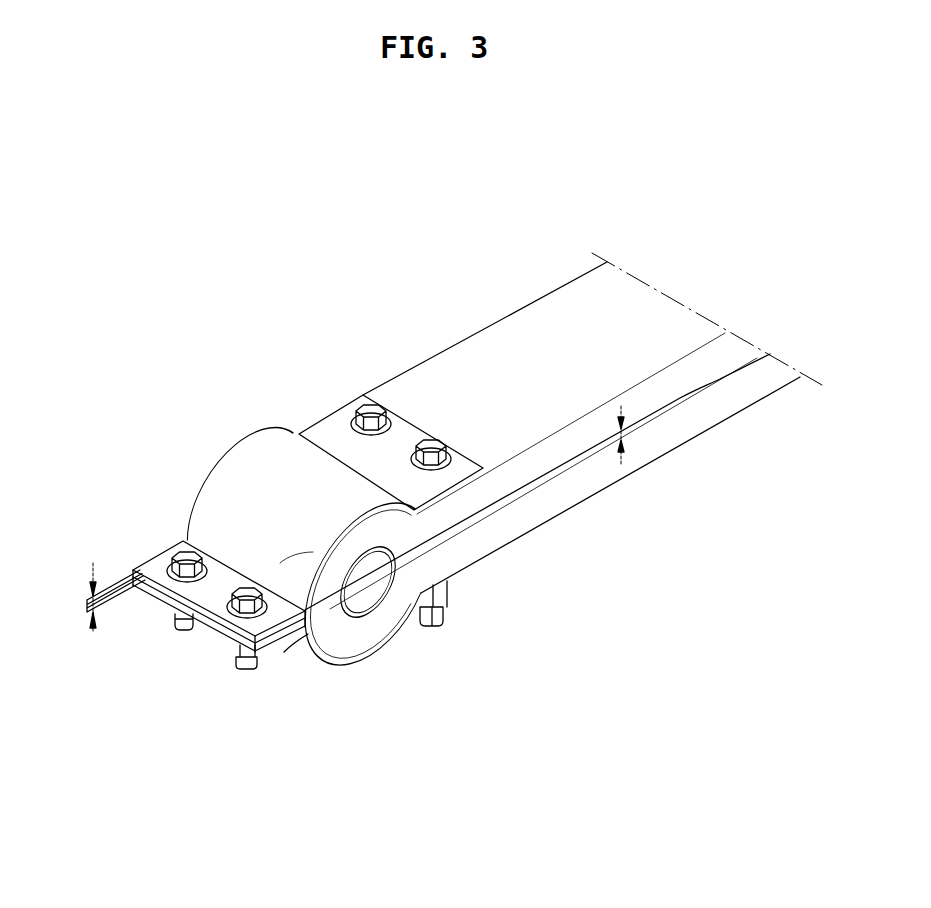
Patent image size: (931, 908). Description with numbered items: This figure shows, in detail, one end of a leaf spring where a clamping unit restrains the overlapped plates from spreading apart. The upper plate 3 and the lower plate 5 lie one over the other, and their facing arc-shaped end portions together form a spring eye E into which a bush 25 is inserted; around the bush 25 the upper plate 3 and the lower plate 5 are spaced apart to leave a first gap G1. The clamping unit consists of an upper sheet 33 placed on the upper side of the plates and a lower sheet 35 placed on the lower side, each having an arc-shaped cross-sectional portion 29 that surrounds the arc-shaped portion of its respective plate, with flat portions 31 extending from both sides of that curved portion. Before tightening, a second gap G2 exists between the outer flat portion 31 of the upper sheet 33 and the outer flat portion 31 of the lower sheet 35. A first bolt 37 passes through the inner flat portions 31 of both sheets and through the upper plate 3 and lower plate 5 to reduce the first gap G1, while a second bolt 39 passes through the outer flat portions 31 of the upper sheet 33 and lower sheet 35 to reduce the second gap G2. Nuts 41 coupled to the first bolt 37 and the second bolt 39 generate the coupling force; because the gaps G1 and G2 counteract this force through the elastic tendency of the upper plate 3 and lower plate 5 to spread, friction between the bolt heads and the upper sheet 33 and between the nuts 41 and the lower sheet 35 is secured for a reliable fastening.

The upper plate 3 is at (572, 314).
The lower plate 5 is at (672, 434).
The bush 25 is at (377, 550).
The arc-shaped cross-sectional portion 29 is at (243, 612).
The flat portions 31 is at (327, 423).
The upper sheet 33 is at (190, 360).
The lower sheet 35 is at (317, 775).
The first bolt 37 is at (372, 405).
The second bolt 39 is at (167, 580).
The nuts 41 is at (180, 630).
The spring eye E is at (373, 578).
The first gap G1 is at (640, 425).
The second gap G2 is at (70, 597).